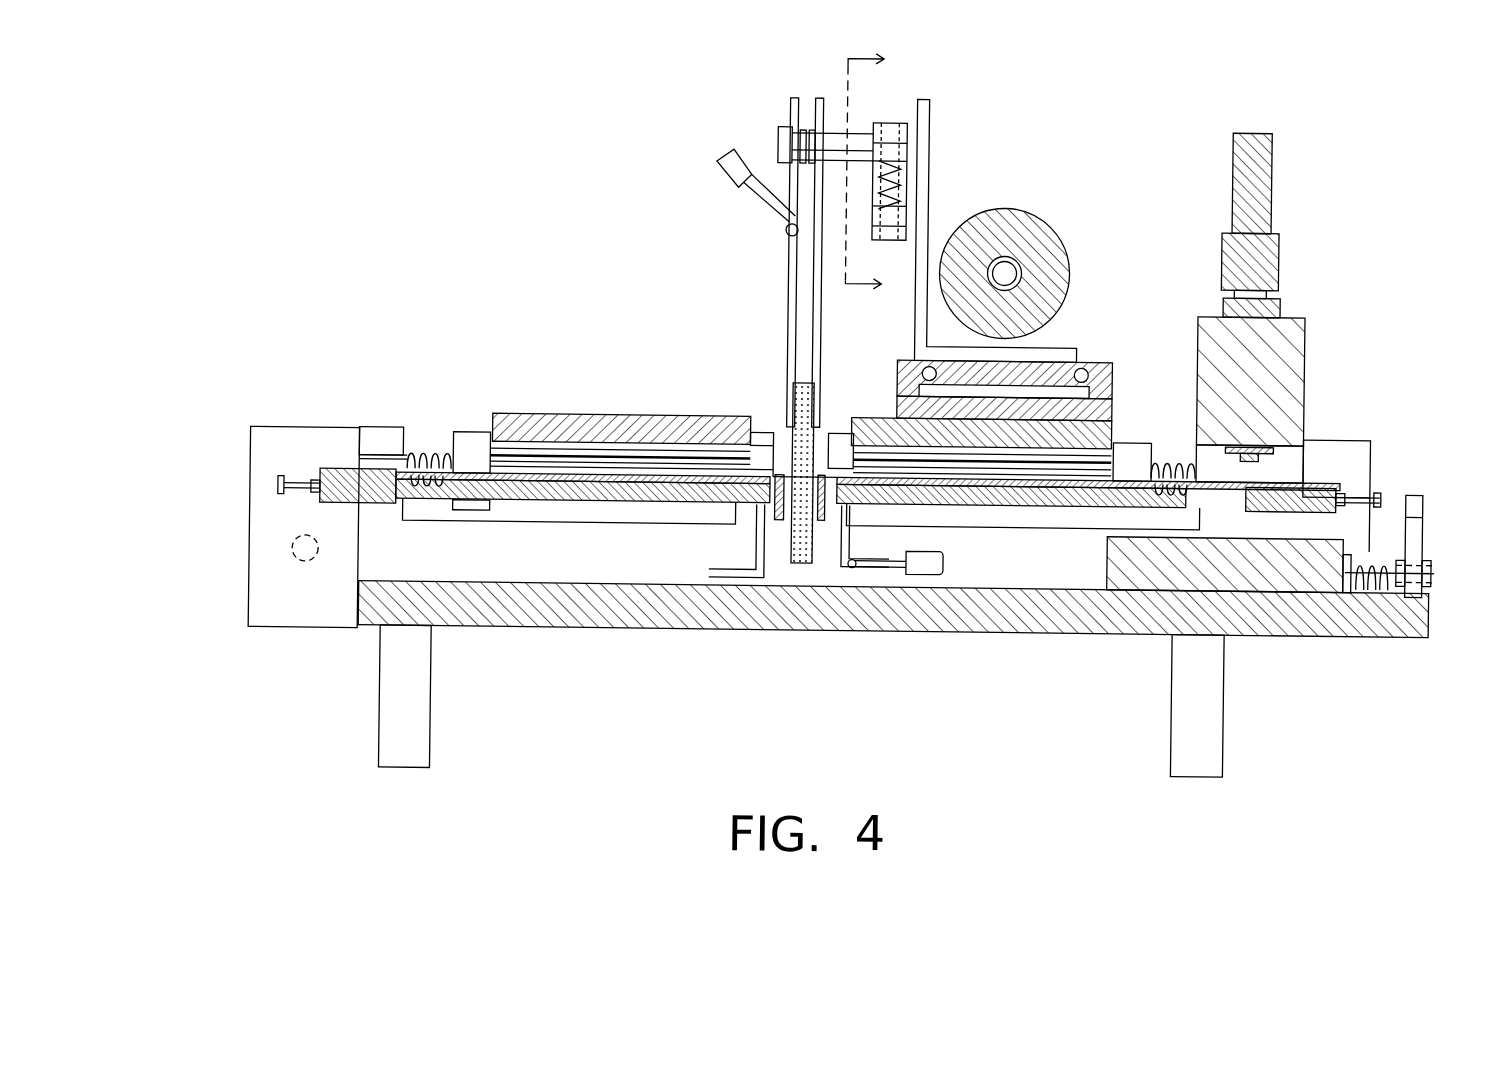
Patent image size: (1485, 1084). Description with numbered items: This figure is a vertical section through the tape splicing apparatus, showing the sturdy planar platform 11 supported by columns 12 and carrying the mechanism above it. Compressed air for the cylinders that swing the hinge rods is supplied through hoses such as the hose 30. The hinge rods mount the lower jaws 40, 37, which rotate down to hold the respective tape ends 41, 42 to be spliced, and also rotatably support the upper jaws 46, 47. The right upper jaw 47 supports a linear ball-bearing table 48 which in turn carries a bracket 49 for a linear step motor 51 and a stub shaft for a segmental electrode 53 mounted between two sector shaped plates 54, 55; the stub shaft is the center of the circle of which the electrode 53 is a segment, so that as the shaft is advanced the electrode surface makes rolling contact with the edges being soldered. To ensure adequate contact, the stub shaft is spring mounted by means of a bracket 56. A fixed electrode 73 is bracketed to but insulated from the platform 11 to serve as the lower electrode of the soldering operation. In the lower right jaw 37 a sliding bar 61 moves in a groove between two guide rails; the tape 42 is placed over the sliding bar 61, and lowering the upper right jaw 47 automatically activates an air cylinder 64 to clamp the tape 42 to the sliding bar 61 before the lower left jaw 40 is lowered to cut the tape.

The planar platform 11 is at (948, 632).
The columns 12 is at (428, 695).
The hose 30 is at (292, 552).
The lower jaw 37 is at (1030, 505).
The lower jaw 40 is at (612, 505).
The tape end 41 is at (356, 466).
The tape end 42 is at (1352, 478).
The upper jaw 46 is at (625, 414).
The upper jaw 47 is at (1112, 438).
The linear ball-bearing table 48 is at (1076, 357).
The bracket 49 is at (928, 172).
The linear step motor 51 is at (1048, 237).
The segmental electrode 53 is at (796, 410).
The sector shaped plate 54 is at (790, 300).
The sector shaped plate 55 is at (821, 300).
The bracket 56 is at (838, 135).
The sliding bar 61 is at (1098, 505).
The air cylinder 64 is at (1296, 380).
The fixed electrode 73 is at (800, 545).